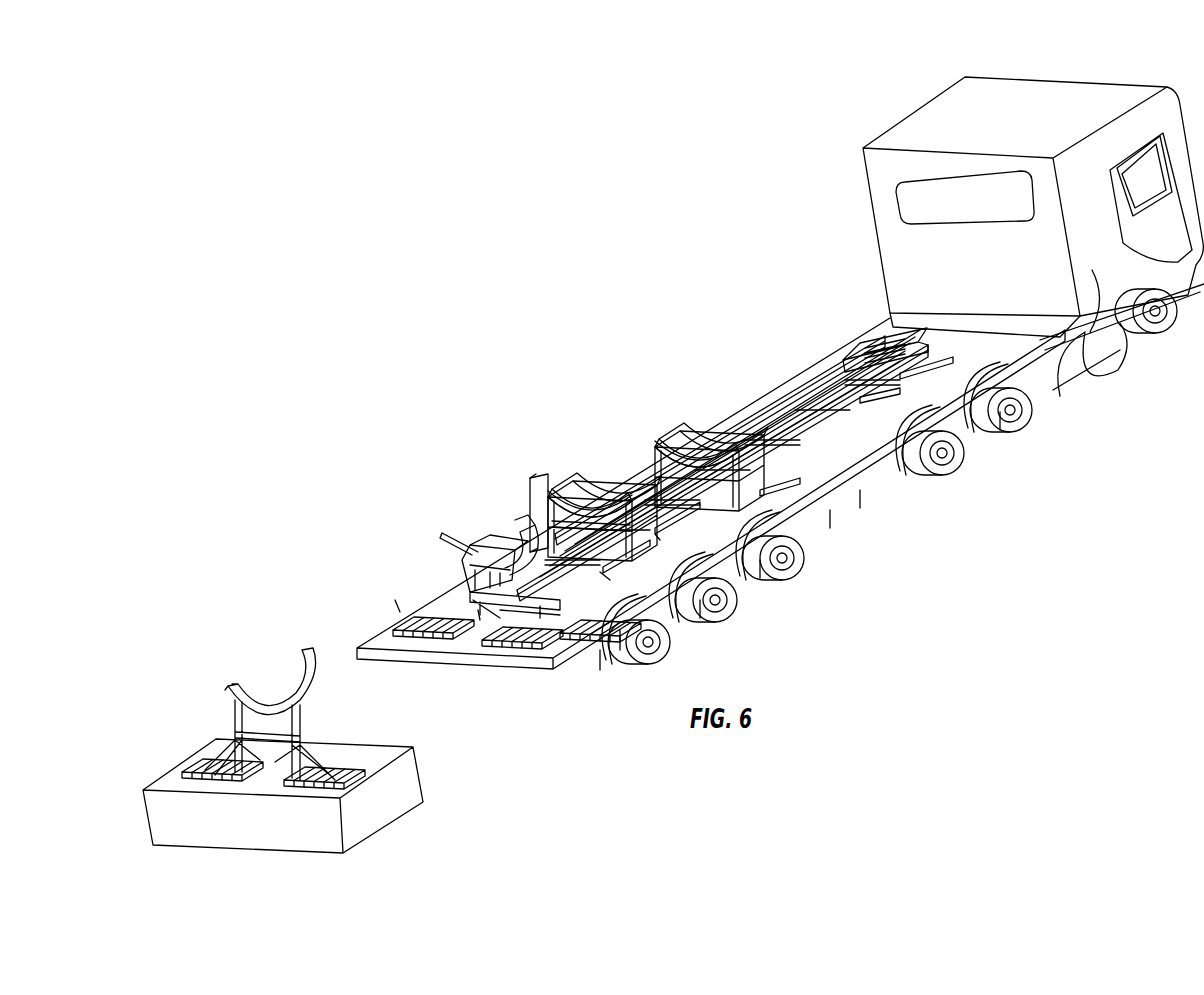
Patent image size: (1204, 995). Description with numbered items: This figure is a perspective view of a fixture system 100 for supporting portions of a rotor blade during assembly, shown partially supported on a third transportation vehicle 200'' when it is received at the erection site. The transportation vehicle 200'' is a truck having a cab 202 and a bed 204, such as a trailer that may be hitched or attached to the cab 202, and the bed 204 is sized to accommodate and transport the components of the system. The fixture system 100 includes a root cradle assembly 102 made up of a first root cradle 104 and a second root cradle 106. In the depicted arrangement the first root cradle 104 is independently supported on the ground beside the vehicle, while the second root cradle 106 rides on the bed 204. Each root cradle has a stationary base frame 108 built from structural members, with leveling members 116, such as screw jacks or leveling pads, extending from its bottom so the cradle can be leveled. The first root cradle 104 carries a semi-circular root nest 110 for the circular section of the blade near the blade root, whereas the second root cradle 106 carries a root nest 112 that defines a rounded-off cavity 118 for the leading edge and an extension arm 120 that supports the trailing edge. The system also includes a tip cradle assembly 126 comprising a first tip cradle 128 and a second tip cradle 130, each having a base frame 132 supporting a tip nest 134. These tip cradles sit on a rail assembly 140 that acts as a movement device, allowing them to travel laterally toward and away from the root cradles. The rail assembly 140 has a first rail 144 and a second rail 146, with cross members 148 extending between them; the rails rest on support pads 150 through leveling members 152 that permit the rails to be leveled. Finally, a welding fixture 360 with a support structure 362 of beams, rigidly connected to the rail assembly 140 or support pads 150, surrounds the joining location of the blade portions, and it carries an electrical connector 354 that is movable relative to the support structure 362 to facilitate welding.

The fixture system 100 is at (722, 454).
The root cradle assembly 102 is at (313, 578).
The first root cradle 104 is at (297, 710).
The second root cradle 106 is at (462, 551).
The base frame 108 is at (318, 718).
The root nest 110 is at (318, 678).
The root nest 112 is at (530, 548).
The leveling members 116 is at (522, 632).
The rounded-off cavity 118 is at (472, 550).
The extension arm 120 is at (438, 540).
The tip cradle assembly 126 is at (593, 447).
The first tip cradle 128 is at (539, 479).
The second tip cradle 130 is at (660, 402).
The base frame 132 is at (642, 480).
The tip nest 134 is at (655, 450).
The rail assembly 140 is at (773, 386).
The first rail 144 is at (825, 372).
The second rail 146 is at (902, 345).
The cross members 148 is at (838, 352).
The support pads 150 is at (800, 470).
The leveling members 152 is at (918, 390).
The third transportation vehicle 200'' is at (982, 213).
The cab 202 is at (1083, 360).
The bed 204 is at (835, 455).
The electrical connector 354 is at (556, 492).
The welding fixture 360 is at (510, 480).
The support structure 362 is at (508, 492).